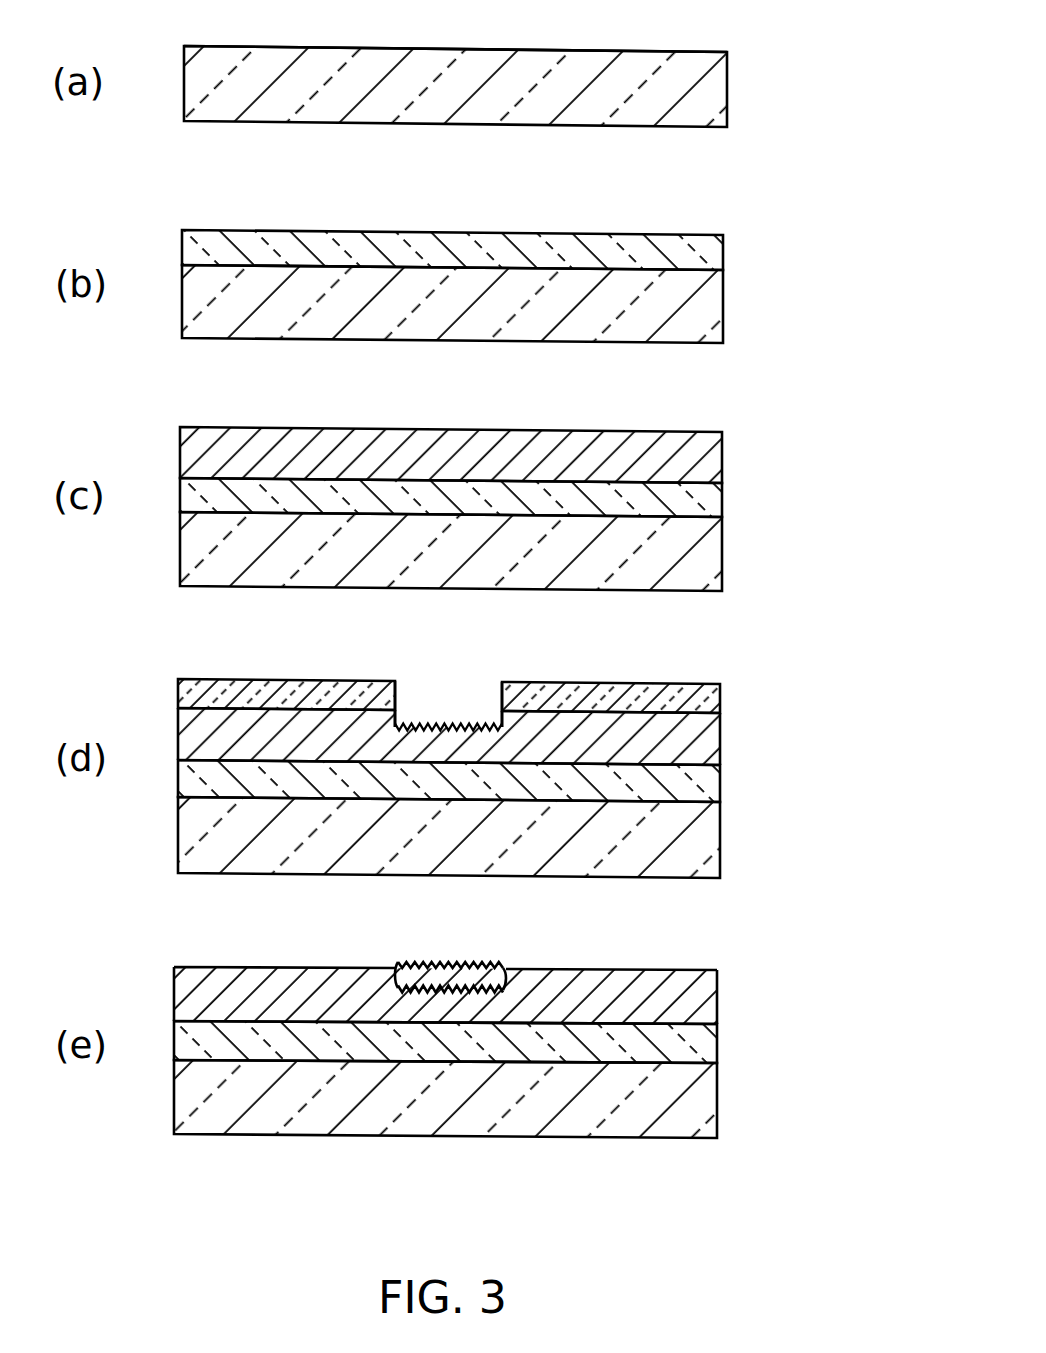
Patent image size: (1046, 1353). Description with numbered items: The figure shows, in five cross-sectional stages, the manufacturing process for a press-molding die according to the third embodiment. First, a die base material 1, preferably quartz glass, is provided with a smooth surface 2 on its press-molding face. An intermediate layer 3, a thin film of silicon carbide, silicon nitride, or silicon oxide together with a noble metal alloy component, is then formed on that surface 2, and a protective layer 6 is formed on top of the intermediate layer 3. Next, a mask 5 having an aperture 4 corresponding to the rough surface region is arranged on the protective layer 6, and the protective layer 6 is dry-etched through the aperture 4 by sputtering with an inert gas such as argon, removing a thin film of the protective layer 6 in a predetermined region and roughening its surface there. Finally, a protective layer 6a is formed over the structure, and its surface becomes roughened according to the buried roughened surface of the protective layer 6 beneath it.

The die base material 1 is at (710, 103).
The surface 2 is at (548, 50).
The intermediate layer 3 is at (707, 257).
The aperture 4 is at (442, 703).
The mask 5 is at (698, 698).
The protective layer 6 is at (695, 468).
The protective layer 6a is at (485, 967).